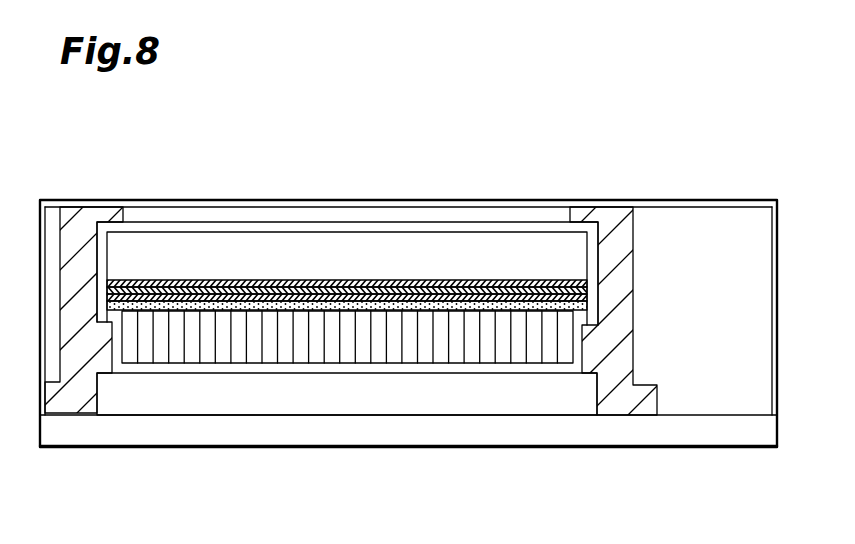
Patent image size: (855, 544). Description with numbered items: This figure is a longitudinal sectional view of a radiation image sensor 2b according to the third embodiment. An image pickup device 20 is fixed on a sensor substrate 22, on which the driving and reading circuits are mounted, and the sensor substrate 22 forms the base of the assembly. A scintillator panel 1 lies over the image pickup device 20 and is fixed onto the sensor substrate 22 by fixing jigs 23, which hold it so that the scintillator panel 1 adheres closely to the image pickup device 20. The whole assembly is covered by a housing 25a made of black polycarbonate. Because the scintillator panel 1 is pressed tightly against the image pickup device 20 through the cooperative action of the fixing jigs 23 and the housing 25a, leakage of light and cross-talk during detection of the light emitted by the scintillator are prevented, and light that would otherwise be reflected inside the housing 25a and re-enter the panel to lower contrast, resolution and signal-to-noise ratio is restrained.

The scintillator panel 1 is at (456, 210).
The radiation image sensor 2b is at (720, 140).
The image pickup device 20 is at (540, 407).
The sensor substrate 22 is at (700, 438).
The fixing jigs 23 is at (73, 230).
The housing 25a is at (263, 202).